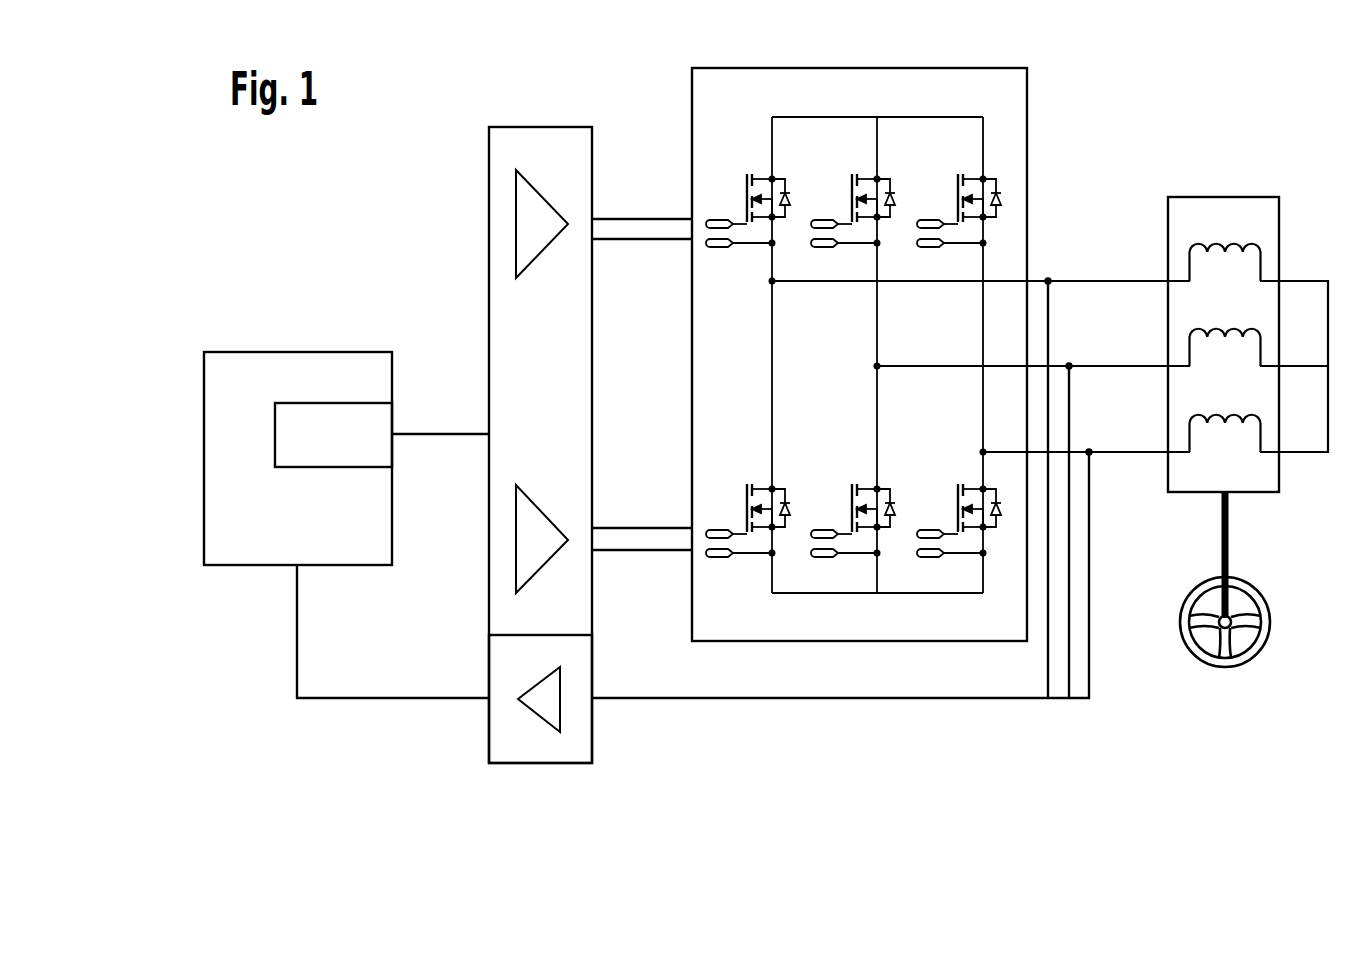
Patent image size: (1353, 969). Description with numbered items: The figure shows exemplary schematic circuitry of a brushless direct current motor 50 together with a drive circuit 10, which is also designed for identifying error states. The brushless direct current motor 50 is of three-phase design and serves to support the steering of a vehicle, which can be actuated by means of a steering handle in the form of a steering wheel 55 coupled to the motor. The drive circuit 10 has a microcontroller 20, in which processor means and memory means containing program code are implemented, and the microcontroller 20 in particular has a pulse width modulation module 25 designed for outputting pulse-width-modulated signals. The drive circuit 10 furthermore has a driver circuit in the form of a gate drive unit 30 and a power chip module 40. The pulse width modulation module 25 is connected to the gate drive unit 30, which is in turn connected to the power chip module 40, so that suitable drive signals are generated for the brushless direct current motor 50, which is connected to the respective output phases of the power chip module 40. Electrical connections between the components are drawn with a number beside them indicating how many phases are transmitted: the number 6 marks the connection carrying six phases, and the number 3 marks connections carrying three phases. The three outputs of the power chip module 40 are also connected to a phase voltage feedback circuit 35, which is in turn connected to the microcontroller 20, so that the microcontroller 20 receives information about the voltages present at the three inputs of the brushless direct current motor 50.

The drive circuit 10 is at (255, 625).
The microcontroller 20 is at (248, 368).
The pulse width modulation module 25 is at (328, 410).
The gate drive unit 30 is at (548, 140).
The phase voltage feedback circuit 35 is at (500, 731).
The power chip module 40 is at (700, 83).
The brushless direct current motor 50 is at (1197, 210).
The steering wheel 55 is at (1213, 660).
The number of phases (three) 3 is at (310, 623).
The number of phases (six) 6 is at (453, 423).